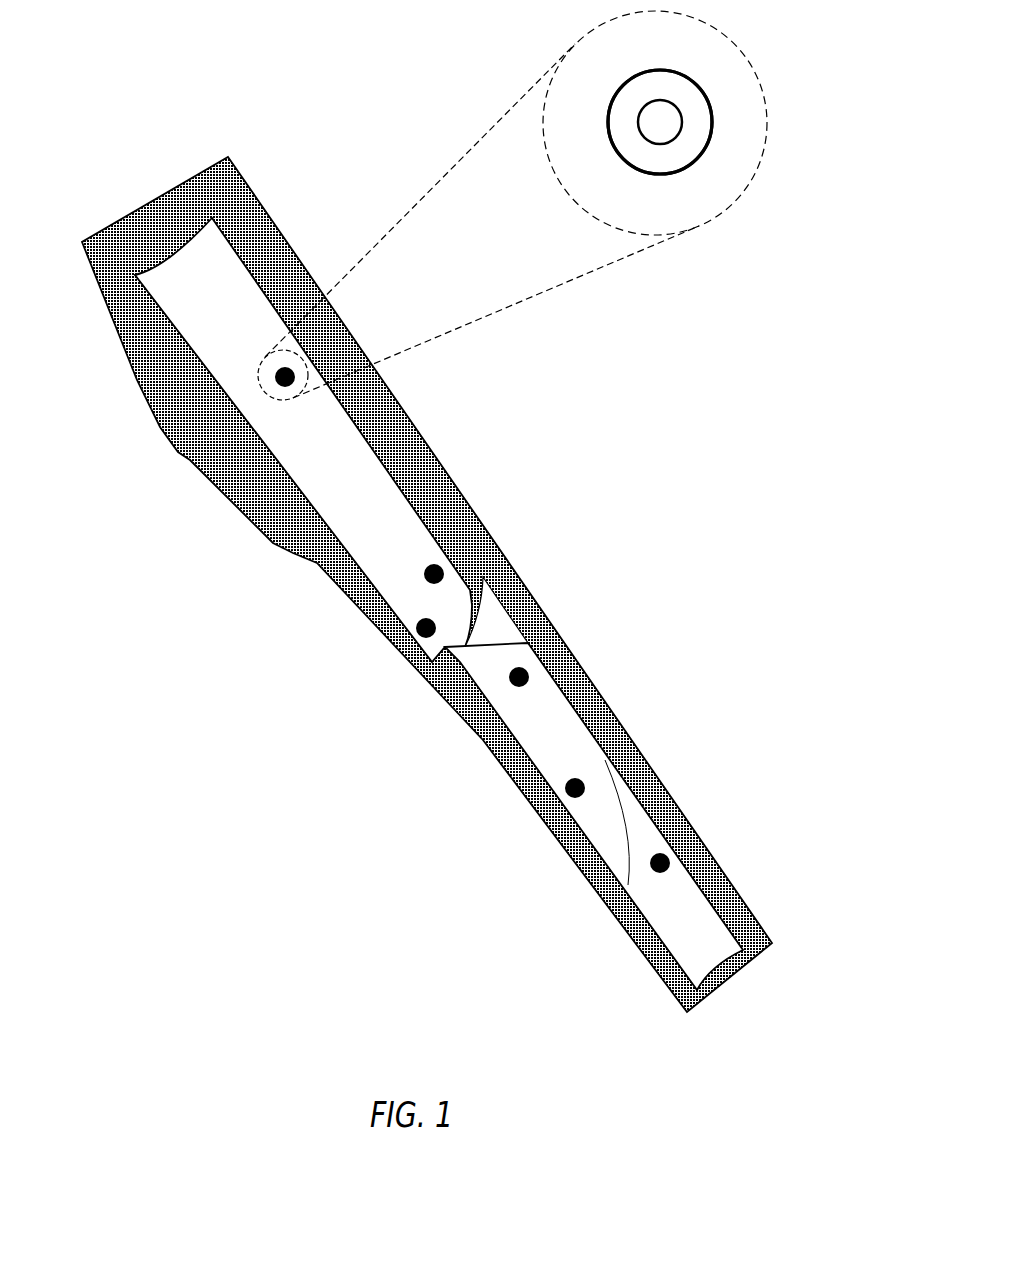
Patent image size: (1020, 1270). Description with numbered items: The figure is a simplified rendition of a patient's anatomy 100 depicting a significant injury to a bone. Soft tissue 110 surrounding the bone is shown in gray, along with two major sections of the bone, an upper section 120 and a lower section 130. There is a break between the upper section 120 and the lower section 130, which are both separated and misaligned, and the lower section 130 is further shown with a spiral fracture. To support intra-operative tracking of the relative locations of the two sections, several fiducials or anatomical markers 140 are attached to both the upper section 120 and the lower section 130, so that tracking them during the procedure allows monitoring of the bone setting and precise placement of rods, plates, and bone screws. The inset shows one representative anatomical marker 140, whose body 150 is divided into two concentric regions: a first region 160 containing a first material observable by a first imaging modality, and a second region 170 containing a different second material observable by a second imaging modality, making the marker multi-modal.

The patient's anatomy 100 is at (118, 145).
The soft tissue 110 is at (233, 182).
The upper section 120 is at (213, 255).
The lower section 130 is at (555, 722).
The anatomical markers 140 is at (270, 390).
The body 150 is at (677, 68).
The first region 160 is at (692, 105).
The second region 170 is at (663, 128).